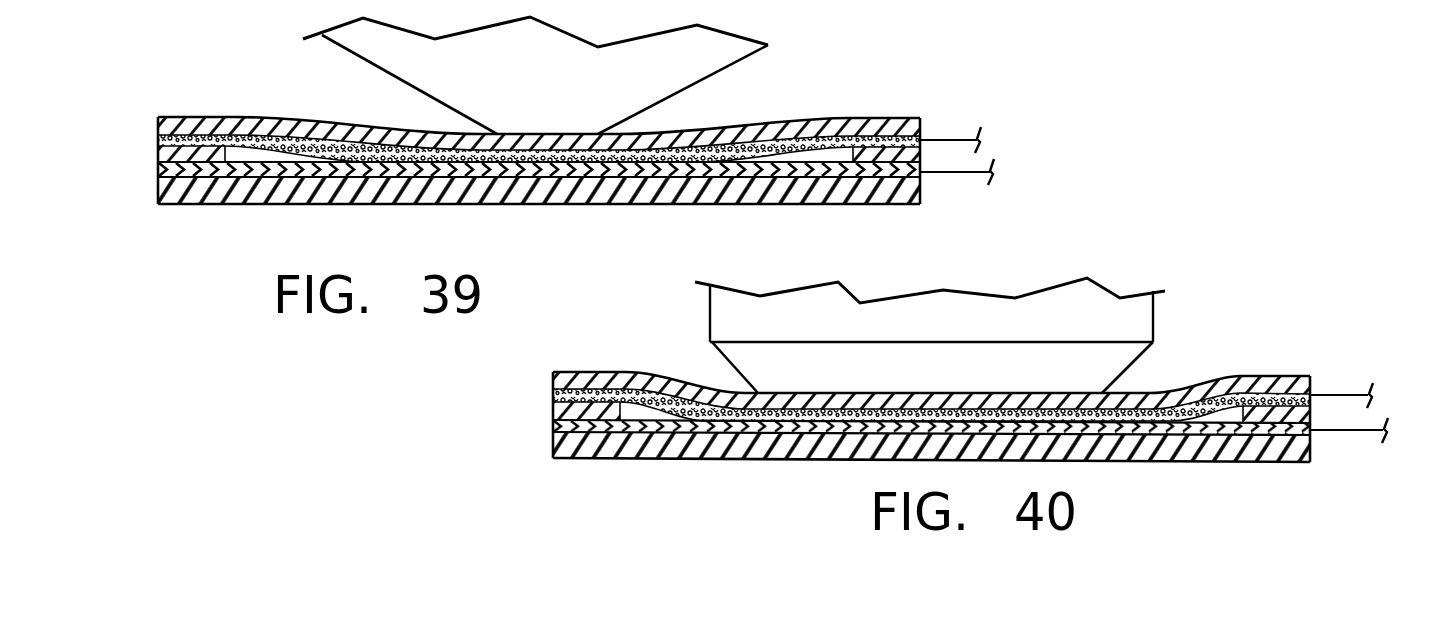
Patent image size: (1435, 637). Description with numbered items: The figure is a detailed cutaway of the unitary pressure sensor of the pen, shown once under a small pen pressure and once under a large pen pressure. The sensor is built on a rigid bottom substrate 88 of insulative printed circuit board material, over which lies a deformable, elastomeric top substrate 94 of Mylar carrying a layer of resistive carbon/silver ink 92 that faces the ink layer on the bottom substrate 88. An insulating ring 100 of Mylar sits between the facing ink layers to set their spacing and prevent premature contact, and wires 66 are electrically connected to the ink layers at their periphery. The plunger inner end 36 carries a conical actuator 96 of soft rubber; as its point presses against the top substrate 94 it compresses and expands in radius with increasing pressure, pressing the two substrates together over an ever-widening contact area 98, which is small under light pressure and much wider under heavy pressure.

In FIG. 40, the plunger inner end 36 is at (1140, 318).
In FIG. 39, the wires 66 is at (952, 172).
In FIG. 40, the wires 66 is at (1346, 430).
In FIG. 39, the bottom substrate 88 is at (203, 204).
In FIG. 40, the bottom substrate 88 is at (598, 459).
In FIG. 39, the resistive carbon/silver ink 92 is at (290, 132).
In FIG. 40, the resistive carbon/silver ink 92 is at (672, 398).
In FIG. 39, the top substrate 94 is at (340, 128).
In FIG. 40, the top substrate 94 is at (783, 393).
In FIG. 39, the conical actuator 96 is at (688, 72).
In FIG. 40, the conical actuator 96 is at (1127, 357).
In FIG. 39, the contact area 98 is at (548, 147).
In FIG. 40, the contact area 98 is at (943, 405).
In FIG. 39, the insulating ring 100 is at (255, 119).
In FIG. 40, the insulating ring 100 is at (643, 376).